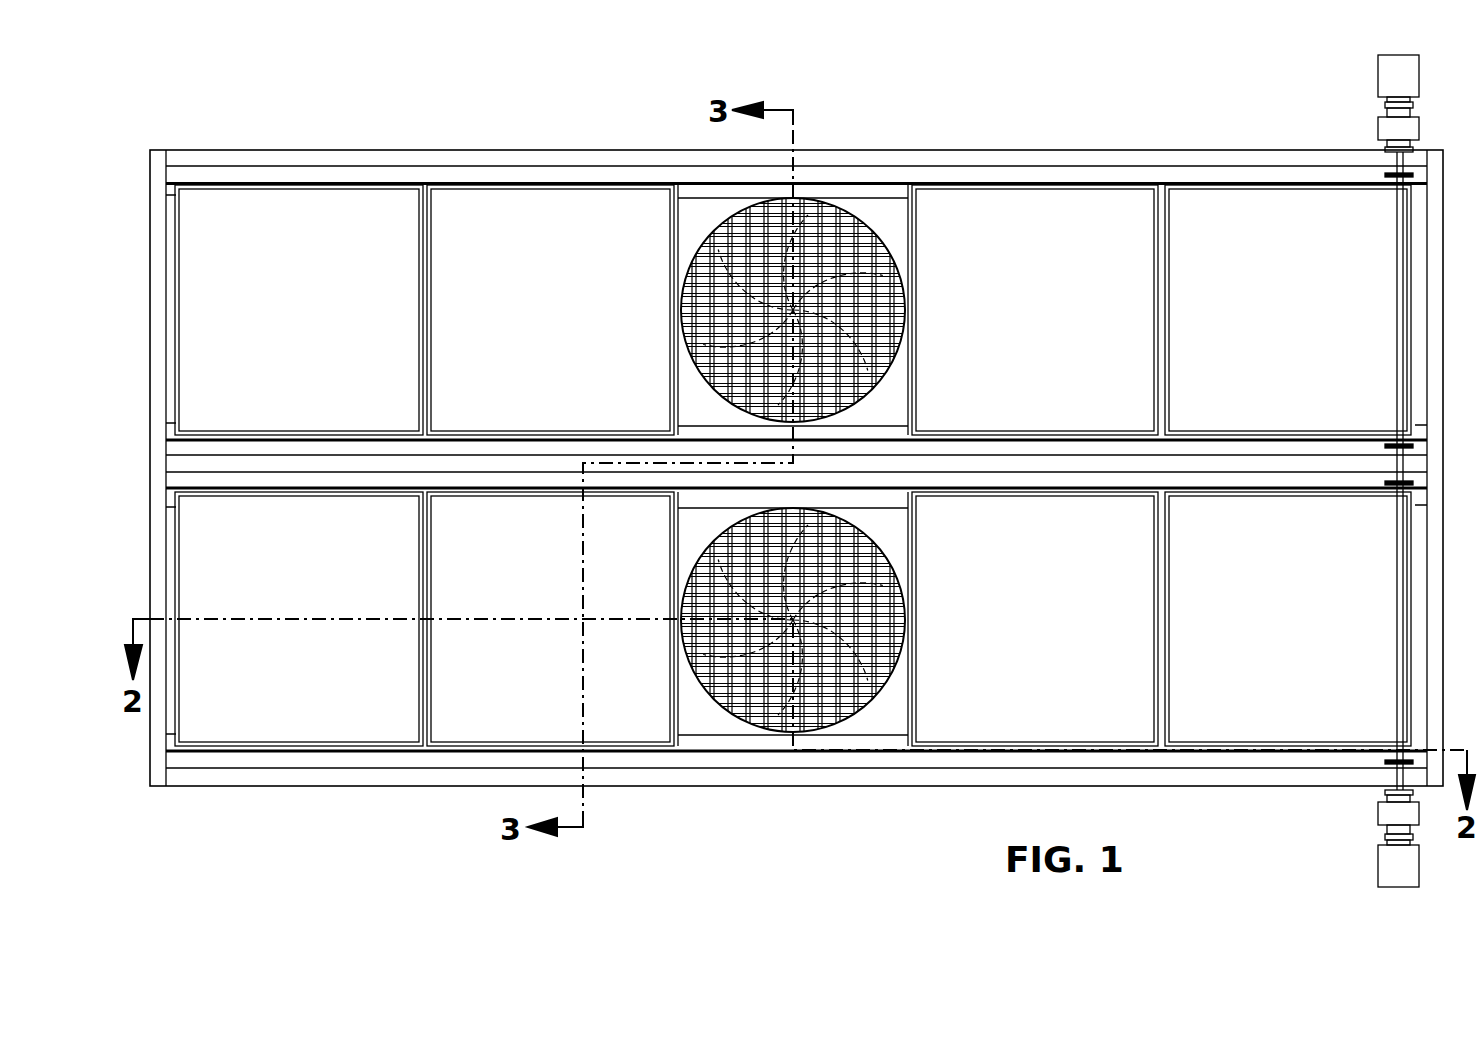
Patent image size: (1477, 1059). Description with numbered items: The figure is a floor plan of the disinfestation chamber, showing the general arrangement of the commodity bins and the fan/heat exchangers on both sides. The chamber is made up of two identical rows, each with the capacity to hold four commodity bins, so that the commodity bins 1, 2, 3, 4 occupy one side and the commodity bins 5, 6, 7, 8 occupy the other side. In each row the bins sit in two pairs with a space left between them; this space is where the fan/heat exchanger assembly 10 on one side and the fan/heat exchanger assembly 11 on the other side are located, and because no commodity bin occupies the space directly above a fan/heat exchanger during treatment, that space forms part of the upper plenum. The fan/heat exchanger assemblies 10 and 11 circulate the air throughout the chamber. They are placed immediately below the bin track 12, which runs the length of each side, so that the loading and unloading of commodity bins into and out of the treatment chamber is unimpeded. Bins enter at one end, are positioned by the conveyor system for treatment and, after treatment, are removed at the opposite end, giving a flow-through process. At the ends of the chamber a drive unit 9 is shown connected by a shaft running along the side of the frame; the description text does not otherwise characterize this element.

The commodity bin 1 is at (299, 310).
The commodity bin 2 is at (550, 310).
The commodity bin 3 is at (1035, 310).
The commodity bin 4 is at (1288, 310).
The commodity bin 5 is at (299, 619).
The commodity bin 6 is at (550, 619).
The commodity bin 7 is at (1035, 619).
The commodity bin 8 is at (1288, 619).
The drive motor 9 is at (1378, 83).
The fan/heat exchanger assembly 10 is at (728, 223).
The fan/heat exchanger assembly 11 is at (815, 222).
The bin track 12 is at (875, 186).